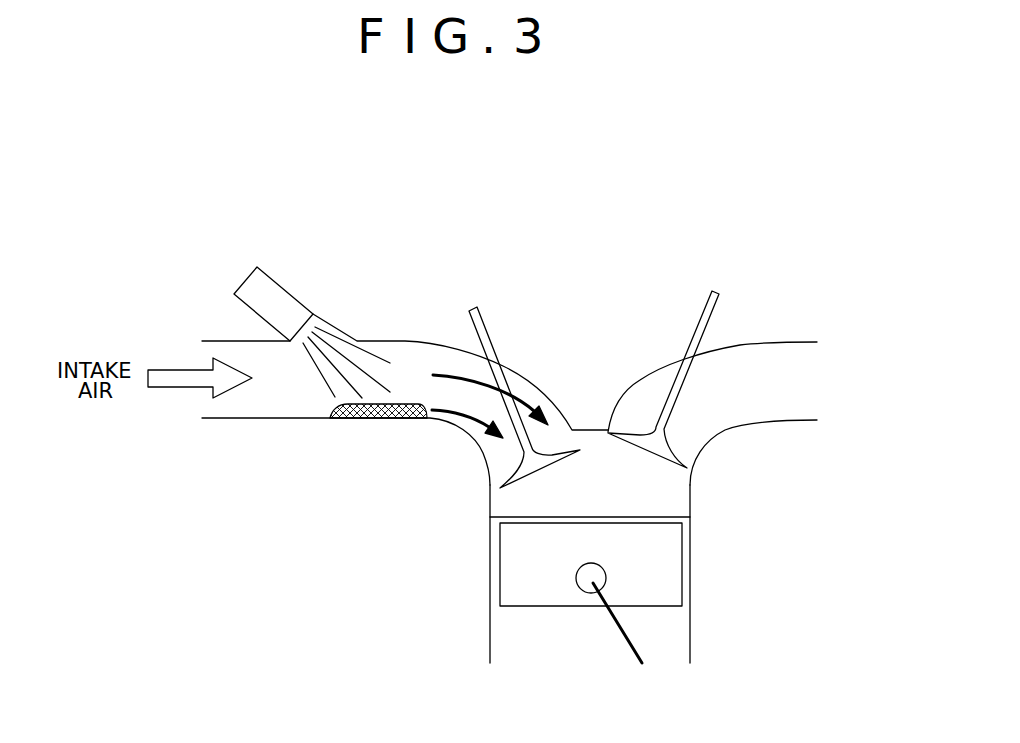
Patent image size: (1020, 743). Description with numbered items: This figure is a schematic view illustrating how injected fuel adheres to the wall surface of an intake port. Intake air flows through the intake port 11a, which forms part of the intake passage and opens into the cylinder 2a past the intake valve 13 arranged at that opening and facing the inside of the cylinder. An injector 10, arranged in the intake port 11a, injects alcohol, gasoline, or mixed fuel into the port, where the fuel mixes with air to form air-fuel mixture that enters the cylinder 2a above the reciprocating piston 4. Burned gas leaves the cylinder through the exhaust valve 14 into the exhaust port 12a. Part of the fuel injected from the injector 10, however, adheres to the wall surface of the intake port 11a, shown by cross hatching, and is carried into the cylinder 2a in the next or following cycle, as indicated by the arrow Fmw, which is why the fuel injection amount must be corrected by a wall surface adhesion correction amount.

The injector 10 is at (283, 289).
The intake port 11a is at (272, 418).
The exhaust port 12a is at (780, 421).
The intake valve 13 is at (488, 337).
The exhaust valve 14 is at (698, 322).
The cylinder 2a is at (667, 497).
The piston 4 is at (663, 568).
The wall-adhering fuel flow arrow Fmw is at (460, 417).